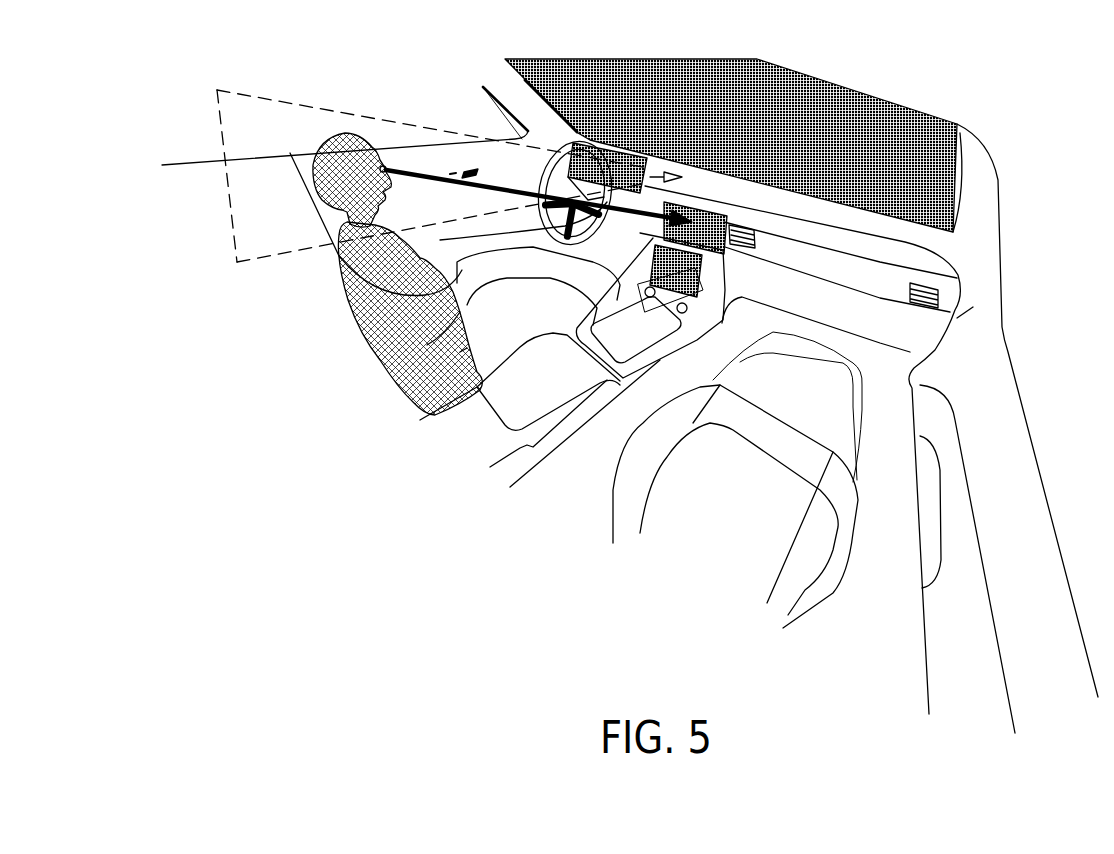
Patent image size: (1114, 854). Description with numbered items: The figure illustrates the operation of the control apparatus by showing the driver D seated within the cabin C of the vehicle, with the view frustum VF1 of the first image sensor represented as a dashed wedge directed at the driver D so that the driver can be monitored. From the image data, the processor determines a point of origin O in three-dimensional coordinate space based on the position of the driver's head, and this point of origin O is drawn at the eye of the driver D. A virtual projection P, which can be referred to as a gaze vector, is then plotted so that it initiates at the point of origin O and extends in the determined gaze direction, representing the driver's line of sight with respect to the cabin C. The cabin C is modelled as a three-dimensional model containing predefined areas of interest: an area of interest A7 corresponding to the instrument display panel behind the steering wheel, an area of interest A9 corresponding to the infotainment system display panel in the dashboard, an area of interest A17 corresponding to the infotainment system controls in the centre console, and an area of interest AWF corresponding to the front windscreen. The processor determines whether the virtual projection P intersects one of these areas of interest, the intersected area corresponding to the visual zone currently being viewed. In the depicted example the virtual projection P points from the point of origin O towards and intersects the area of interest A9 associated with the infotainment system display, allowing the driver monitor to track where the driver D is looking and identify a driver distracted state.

The point of origin O is at (381, 167).
The virtual projection P is at (537, 200).
The area of interest corresponding to the instrument display panel A7 is at (613, 160).
The area of interest corresponding to the front windscreen AWF is at (877, 105).
The cabin C is at (1005, 149).
The area of interest corresponding to the infotainment system display panel A9 is at (713, 222).
The area of interest corresponding to the infotainment system controls A17 is at (693, 276).
The view frustum VF1 is at (243, 212).
The driver D is at (378, 322).